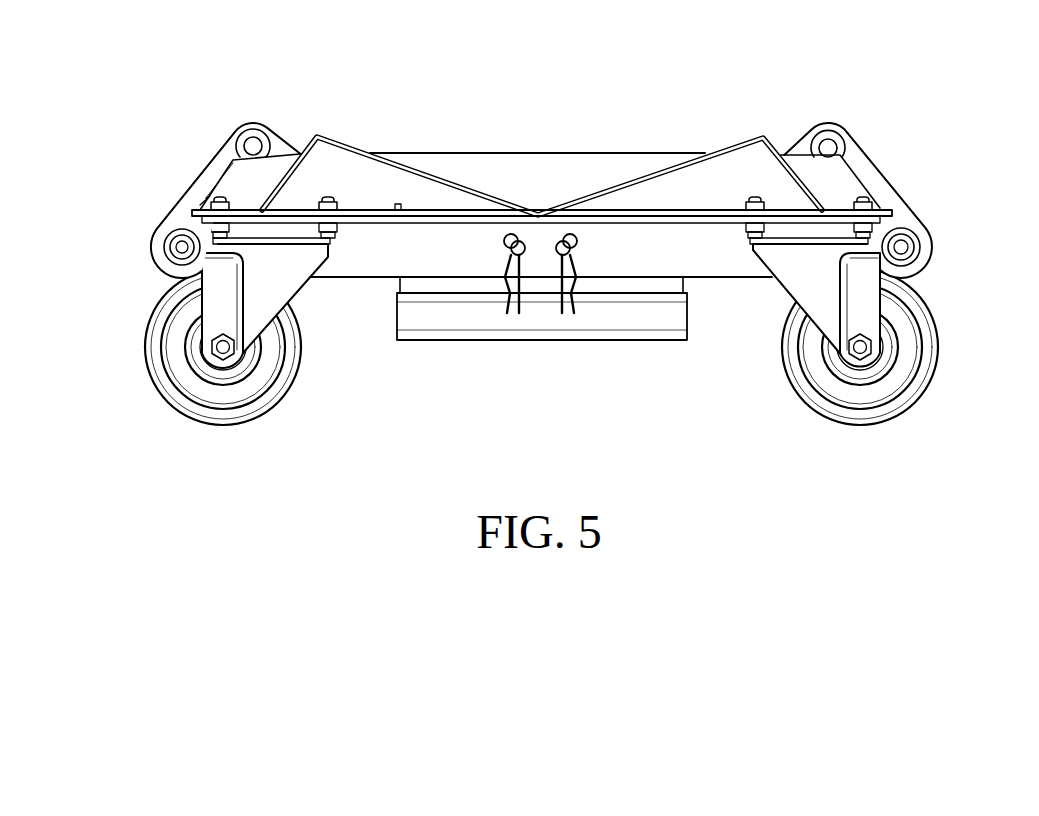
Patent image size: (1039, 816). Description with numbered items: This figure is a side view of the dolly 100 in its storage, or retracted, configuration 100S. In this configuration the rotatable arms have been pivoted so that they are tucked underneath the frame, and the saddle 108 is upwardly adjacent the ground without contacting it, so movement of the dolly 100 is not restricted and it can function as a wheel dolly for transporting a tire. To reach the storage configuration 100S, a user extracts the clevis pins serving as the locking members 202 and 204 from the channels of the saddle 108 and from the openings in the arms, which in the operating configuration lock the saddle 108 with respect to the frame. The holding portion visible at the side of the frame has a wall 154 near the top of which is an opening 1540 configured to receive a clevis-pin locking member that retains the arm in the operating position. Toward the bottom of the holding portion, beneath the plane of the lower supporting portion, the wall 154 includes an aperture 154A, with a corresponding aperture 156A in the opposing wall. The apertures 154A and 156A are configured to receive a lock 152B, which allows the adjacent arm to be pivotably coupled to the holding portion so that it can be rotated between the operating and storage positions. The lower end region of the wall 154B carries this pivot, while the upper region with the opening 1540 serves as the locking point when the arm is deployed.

The dolly 100 is at (590, 218).
The storage configuration 100S is at (590, 238).
The saddle 108 is at (534, 352).
The lock 152B is at (905, 244).
The wall 154 is at (892, 189).
The aperture 154A is at (943, 260).
The upper end of pivot arm 154B is at (883, 152).
The opening 1540 is at (826, 133).
The aperture 156A is at (948, 259).
The locking member 202 is at (510, 222).
The locking member 204 is at (578, 250).